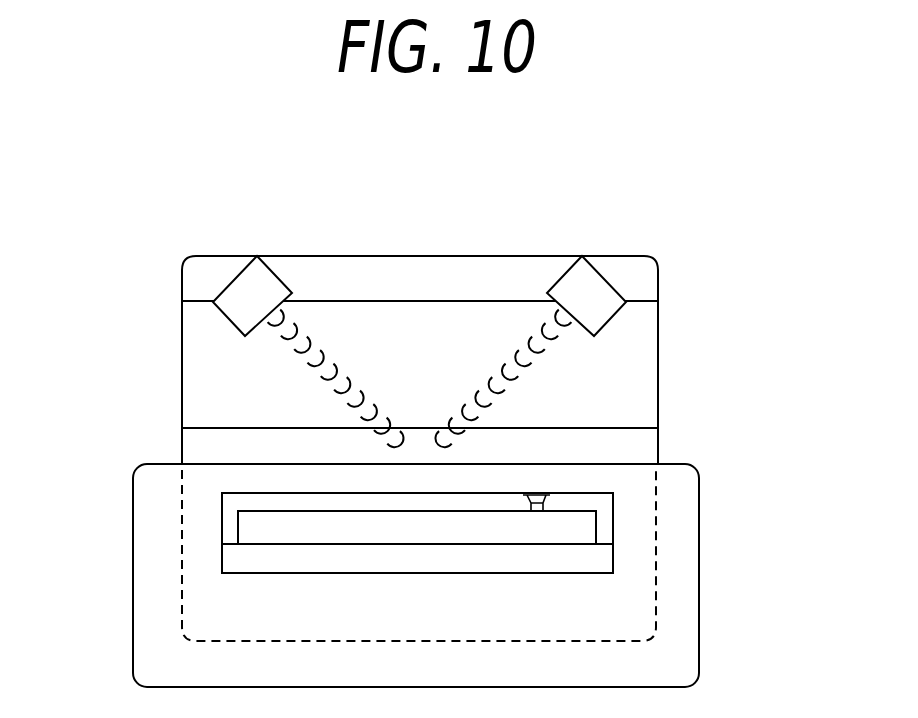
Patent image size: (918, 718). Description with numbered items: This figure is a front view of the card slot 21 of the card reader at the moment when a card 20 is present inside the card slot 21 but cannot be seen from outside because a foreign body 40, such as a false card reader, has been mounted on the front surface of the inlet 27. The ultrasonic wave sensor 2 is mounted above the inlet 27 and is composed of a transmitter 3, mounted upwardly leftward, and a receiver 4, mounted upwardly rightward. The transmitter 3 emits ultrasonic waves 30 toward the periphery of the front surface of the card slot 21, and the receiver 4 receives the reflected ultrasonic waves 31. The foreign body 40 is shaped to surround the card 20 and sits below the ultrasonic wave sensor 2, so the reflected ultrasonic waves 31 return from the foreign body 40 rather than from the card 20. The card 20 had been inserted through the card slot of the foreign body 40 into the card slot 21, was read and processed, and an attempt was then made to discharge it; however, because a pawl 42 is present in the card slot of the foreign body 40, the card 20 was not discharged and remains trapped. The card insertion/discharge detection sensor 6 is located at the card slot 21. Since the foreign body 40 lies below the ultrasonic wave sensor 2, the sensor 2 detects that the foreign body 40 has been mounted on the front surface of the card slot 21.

The ultrasonic wave sensor 2 is at (640, 275).
The transmitter 3 is at (253, 277).
The receiver 4 is at (586, 277).
The card insertion/discharge detection sensor 6 is at (557, 491).
The card 20 is at (580, 530).
The card slot 21 is at (247, 502).
The inlet 27 is at (638, 447).
The ultrasonic waves 30 is at (267, 367).
The reflected ultrasonic waves 31 is at (543, 385).
The foreign body 40 is at (693, 602).
The pawl 42 is at (243, 563).